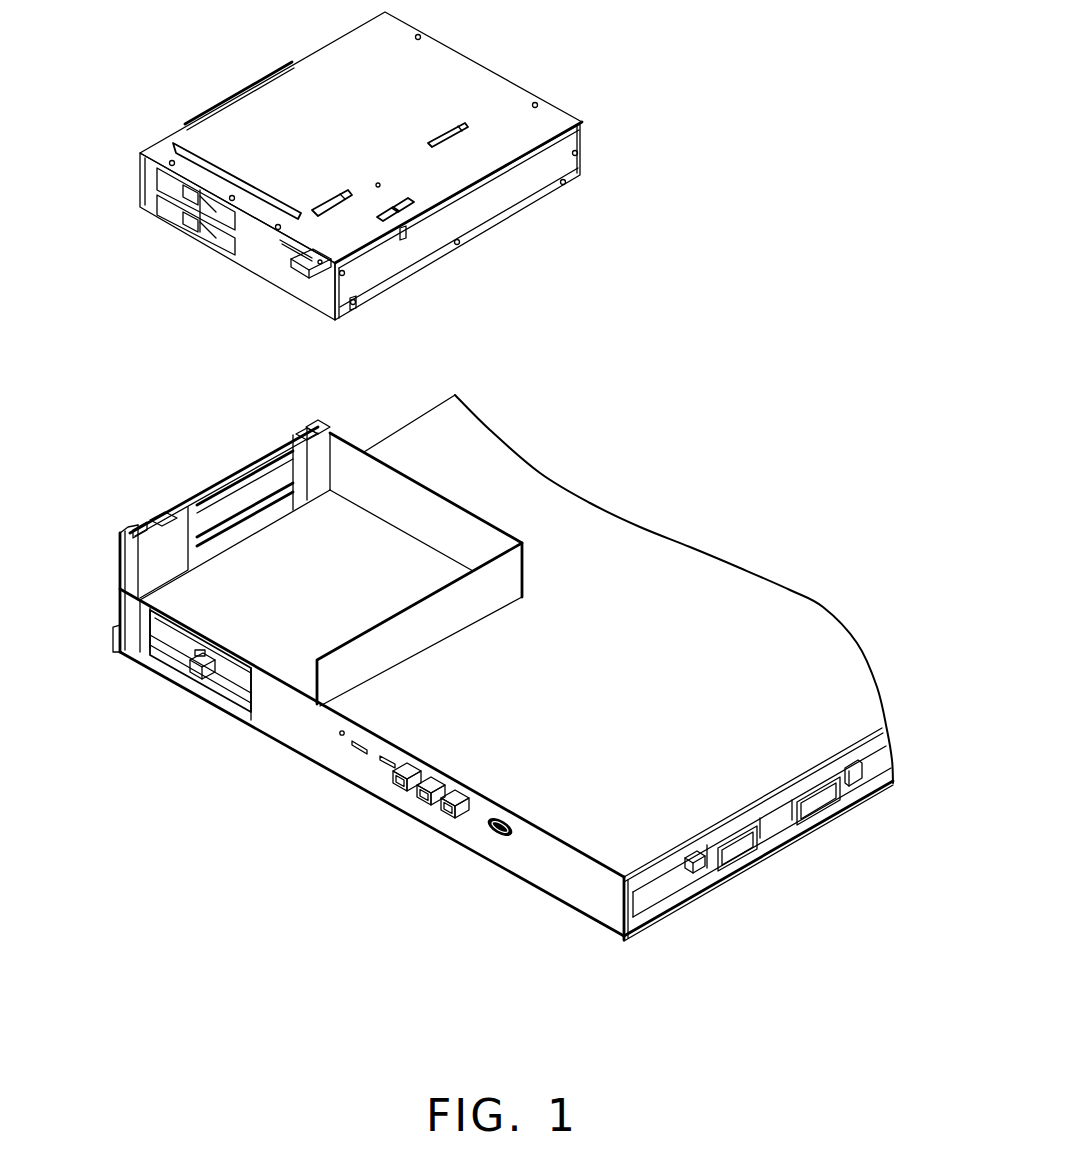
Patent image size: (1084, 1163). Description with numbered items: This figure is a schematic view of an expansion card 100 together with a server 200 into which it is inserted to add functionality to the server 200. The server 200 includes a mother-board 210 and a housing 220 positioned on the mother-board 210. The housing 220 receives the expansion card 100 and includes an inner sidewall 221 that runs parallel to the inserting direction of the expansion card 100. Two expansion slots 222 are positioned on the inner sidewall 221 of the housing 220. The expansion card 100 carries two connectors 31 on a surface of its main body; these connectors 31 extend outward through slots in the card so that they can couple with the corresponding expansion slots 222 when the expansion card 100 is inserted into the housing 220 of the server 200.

The expansion card 100 is at (455, 72).
The connector 31 is at (240, 90).
The server 200 is at (217, 453).
The mother-board 210 is at (592, 773).
The housing 220 is at (277, 612).
The inner sidewall 221 is at (157, 553).
The expansion slot 222 is at (215, 497).